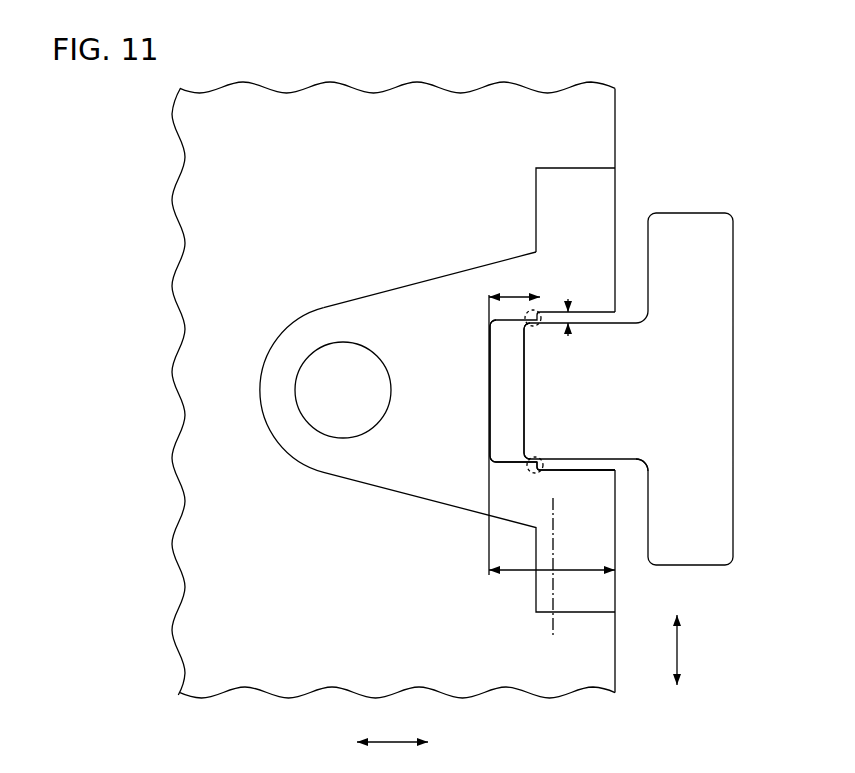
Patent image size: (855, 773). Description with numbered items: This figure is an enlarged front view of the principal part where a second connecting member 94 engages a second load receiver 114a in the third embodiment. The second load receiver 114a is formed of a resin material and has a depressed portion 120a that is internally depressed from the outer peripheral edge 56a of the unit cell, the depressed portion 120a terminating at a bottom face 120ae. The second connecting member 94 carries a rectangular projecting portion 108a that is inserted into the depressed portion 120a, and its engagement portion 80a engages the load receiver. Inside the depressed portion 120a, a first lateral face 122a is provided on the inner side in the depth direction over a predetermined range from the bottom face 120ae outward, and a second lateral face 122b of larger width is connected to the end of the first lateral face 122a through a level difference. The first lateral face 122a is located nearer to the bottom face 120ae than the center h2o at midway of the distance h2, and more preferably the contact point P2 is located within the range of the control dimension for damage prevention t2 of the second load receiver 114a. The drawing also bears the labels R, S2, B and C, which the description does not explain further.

The second connecting member 94 is at (692, 211).
The second load receiver 114a is at (418, 280).
The depressed portion 120a is at (510, 380).
The bottom face 120ae is at (492, 392).
The projecting portion 108a is at (524, 406).
The first lateral face 122a is at (490, 462).
The second lateral face 122b is at (561, 470).
The engagement portion 80a is at (632, 478).
The outer peripheral edge 56a is at (616, 652).
The fillet radius R is at (490, 324).
The contact point P2 is at (535, 326).
The control dimension for damage prevention t2 is at (514, 285).
The engagement clearance S2 is at (581, 328).
The distance h2 is at (552, 557).
The center h2o is at (553, 580).
The direction B is at (392, 730).
The direction C is at (687, 650).